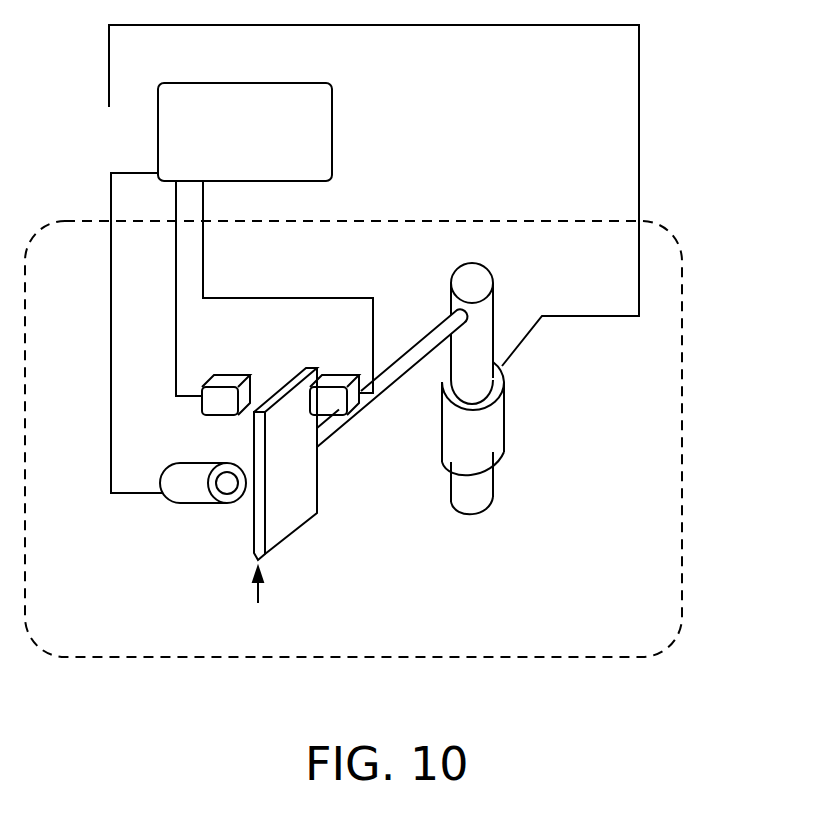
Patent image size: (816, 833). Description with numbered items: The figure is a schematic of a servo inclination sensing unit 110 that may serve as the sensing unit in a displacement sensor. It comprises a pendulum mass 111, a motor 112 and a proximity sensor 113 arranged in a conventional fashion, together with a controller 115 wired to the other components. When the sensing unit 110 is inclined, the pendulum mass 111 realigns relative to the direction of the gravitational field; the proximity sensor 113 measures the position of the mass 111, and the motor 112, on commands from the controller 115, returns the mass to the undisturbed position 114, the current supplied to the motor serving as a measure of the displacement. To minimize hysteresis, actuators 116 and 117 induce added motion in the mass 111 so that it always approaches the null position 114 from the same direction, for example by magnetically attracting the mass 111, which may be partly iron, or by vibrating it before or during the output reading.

The servo inclination sensing unit 110 is at (682, 347).
The pendulum mass 111 is at (300, 485).
The motor 112 is at (495, 436).
The proximity sensor 113 is at (187, 488).
The undisturbed position 114 is at (267, 590).
The controller 115 is at (313, 123).
The actuator 116 is at (225, 377).
The actuator 117 is at (340, 378).